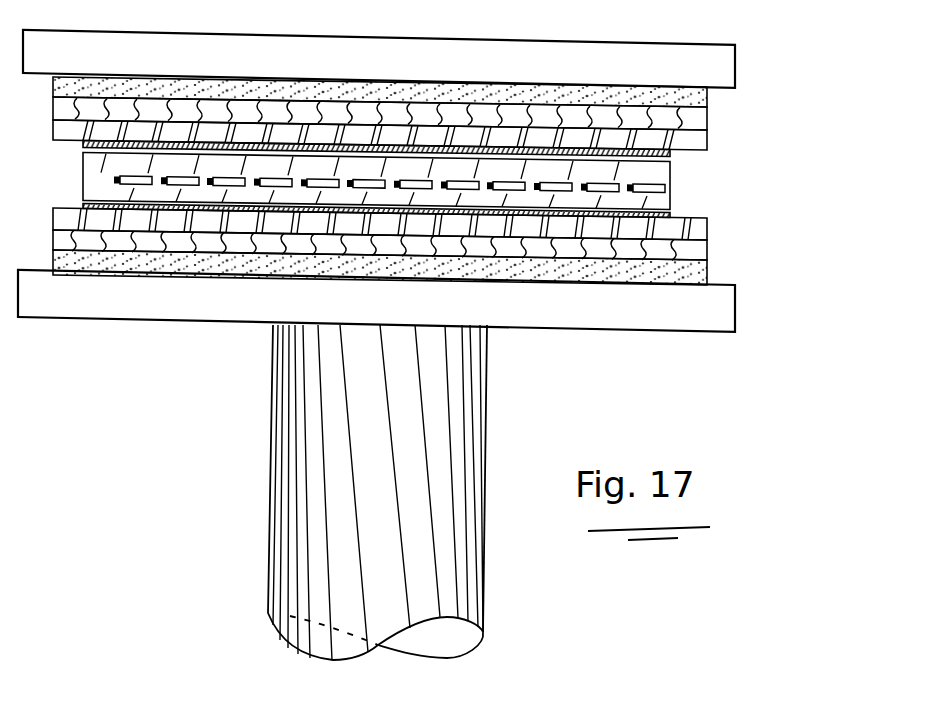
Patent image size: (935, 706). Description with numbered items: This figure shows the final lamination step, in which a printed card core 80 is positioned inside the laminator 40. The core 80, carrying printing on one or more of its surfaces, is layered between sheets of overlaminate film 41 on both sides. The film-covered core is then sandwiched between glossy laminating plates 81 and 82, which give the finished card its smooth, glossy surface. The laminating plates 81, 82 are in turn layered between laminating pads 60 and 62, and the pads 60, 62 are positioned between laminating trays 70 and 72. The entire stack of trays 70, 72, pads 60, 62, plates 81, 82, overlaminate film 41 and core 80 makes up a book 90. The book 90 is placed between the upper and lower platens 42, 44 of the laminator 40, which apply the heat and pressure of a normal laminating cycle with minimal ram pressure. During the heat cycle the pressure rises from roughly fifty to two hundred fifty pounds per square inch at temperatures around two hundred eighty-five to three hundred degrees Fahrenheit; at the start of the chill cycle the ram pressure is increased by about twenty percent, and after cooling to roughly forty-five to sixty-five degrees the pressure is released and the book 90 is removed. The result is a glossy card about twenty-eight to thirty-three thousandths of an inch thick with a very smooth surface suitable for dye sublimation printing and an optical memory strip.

The laminator 40 is at (248, 397).
The overlaminate film 41 is at (670, 155).
The platen 42 is at (358, 68).
The platen 44 is at (358, 313).
The laminating pad 60 is at (707, 125).
The laminating pad 62 is at (707, 252).
The laminating tray 70 is at (707, 98).
The laminating tray 72 is at (429, 284).
The core 80 is at (673, 162).
The glossy laminating plate 81 is at (707, 143).
The glossy laminating plate 82 is at (707, 227).
The book 90 is at (483, 185).